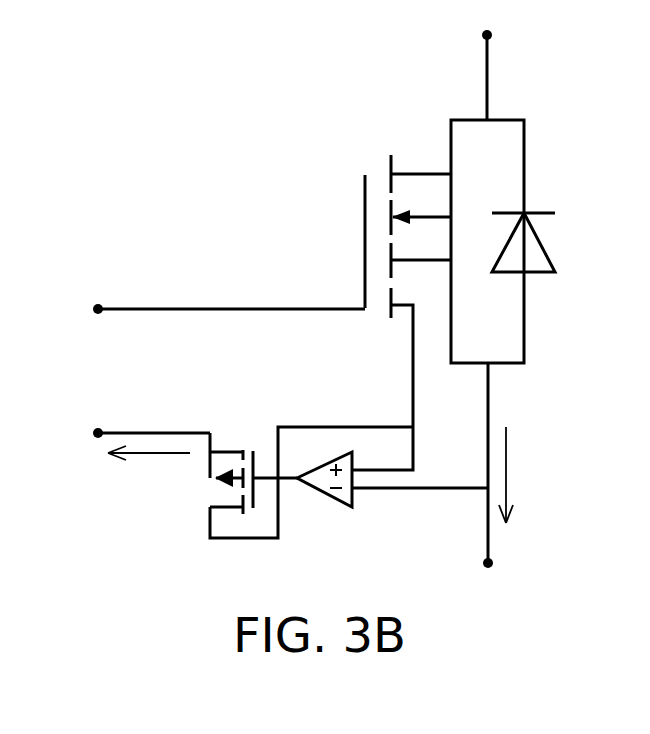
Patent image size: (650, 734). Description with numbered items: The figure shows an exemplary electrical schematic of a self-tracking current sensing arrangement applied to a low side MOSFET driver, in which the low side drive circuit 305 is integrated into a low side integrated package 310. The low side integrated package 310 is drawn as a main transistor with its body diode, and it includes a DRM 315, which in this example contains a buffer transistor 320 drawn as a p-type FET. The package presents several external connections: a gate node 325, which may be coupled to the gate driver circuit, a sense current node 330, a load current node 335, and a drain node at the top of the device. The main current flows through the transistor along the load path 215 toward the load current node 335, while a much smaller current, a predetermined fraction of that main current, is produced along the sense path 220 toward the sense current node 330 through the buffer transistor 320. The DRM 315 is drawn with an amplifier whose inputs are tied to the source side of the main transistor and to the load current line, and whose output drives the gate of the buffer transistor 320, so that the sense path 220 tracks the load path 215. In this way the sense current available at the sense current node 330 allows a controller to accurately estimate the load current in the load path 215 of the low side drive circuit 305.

The low side drive circuit 305 is at (140, 101).
The low side integrated package 310 is at (355, 137).
The DRM 315 is at (247, 397).
The buffer transistor 320 is at (245, 446).
The gate node 325 is at (222, 289).
The sense current node 330 is at (145, 418).
The load current node 335 is at (514, 469).
The load path 215 is at (523, 475).
The sense path 220 is at (149, 465).